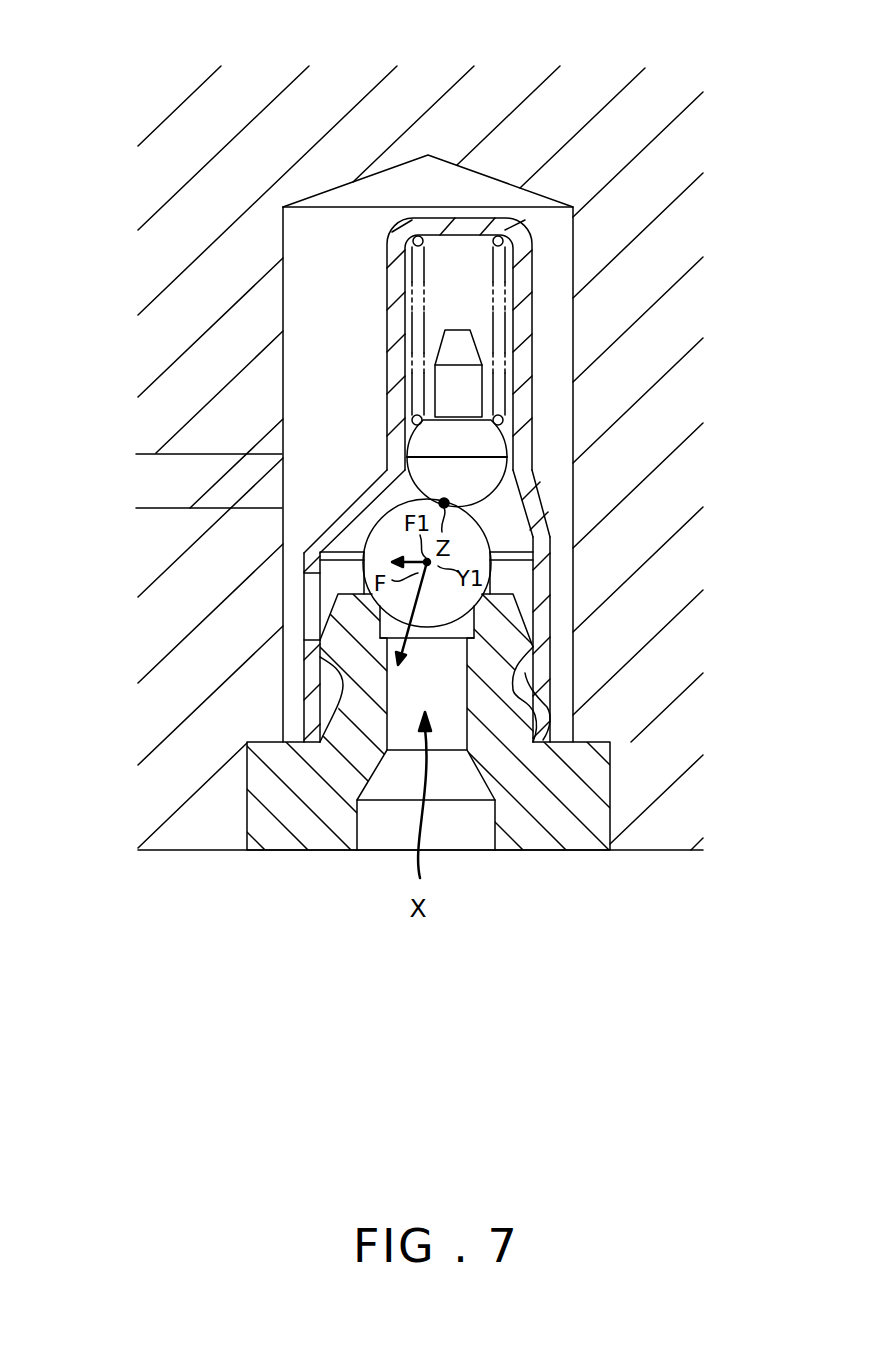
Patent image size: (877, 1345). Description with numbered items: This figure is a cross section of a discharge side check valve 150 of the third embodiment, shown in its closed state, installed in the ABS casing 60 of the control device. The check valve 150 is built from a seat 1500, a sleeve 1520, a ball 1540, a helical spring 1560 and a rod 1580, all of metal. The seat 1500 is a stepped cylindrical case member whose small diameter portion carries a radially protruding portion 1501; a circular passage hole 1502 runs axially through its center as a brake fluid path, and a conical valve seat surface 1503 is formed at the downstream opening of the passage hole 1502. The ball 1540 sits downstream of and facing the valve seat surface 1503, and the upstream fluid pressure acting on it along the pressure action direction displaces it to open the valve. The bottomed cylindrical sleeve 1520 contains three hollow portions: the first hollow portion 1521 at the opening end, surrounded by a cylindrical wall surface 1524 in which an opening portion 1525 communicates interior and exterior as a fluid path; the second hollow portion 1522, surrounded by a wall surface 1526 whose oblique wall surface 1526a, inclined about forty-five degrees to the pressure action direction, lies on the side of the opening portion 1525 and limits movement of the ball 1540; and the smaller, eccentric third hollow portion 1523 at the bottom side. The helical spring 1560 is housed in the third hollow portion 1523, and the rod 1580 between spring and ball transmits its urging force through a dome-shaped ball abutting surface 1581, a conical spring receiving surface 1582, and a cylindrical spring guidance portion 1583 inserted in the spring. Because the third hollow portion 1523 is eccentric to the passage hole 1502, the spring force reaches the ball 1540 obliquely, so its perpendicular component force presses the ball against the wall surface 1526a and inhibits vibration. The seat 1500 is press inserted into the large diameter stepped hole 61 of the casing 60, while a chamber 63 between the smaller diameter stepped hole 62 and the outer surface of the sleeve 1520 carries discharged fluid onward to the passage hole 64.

The ABS casing 60 is at (402, 128).
The large diameter stepped hole 61 is at (246, 795).
The smaller diameter stepped hole 62 is at (282, 700).
The chamber 63 is at (330, 345).
The passage hole 64 is at (208, 456).
The check valve 150 is at (362, 302).
The seat 1500 is at (545, 803).
The protruding portion 1501 is at (550, 690).
The passage hole 1502 is at (448, 722).
The valve seat surface 1503 is at (540, 657).
The sleeve 1520 is at (414, 480).
The first hollow portion 1521 is at (518, 571).
The second hollow portion 1522 is at (510, 538).
The third hollow portion 1523 is at (465, 267).
The cylindrical wall surface 1524 is at (542, 617).
The opening portion 1525 is at (305, 607).
The wall surface 1526 is at (540, 504).
The wall surface 1526a is at (343, 520).
The ball 1540 is at (348, 572).
The helical spring 1560 is at (385, 248).
The rod 1580 is at (422, 478).
The ball abutting surface 1581 is at (477, 475).
The spring receiving surface 1582 is at (452, 427).
The spring guidance portion 1583 is at (465, 383).